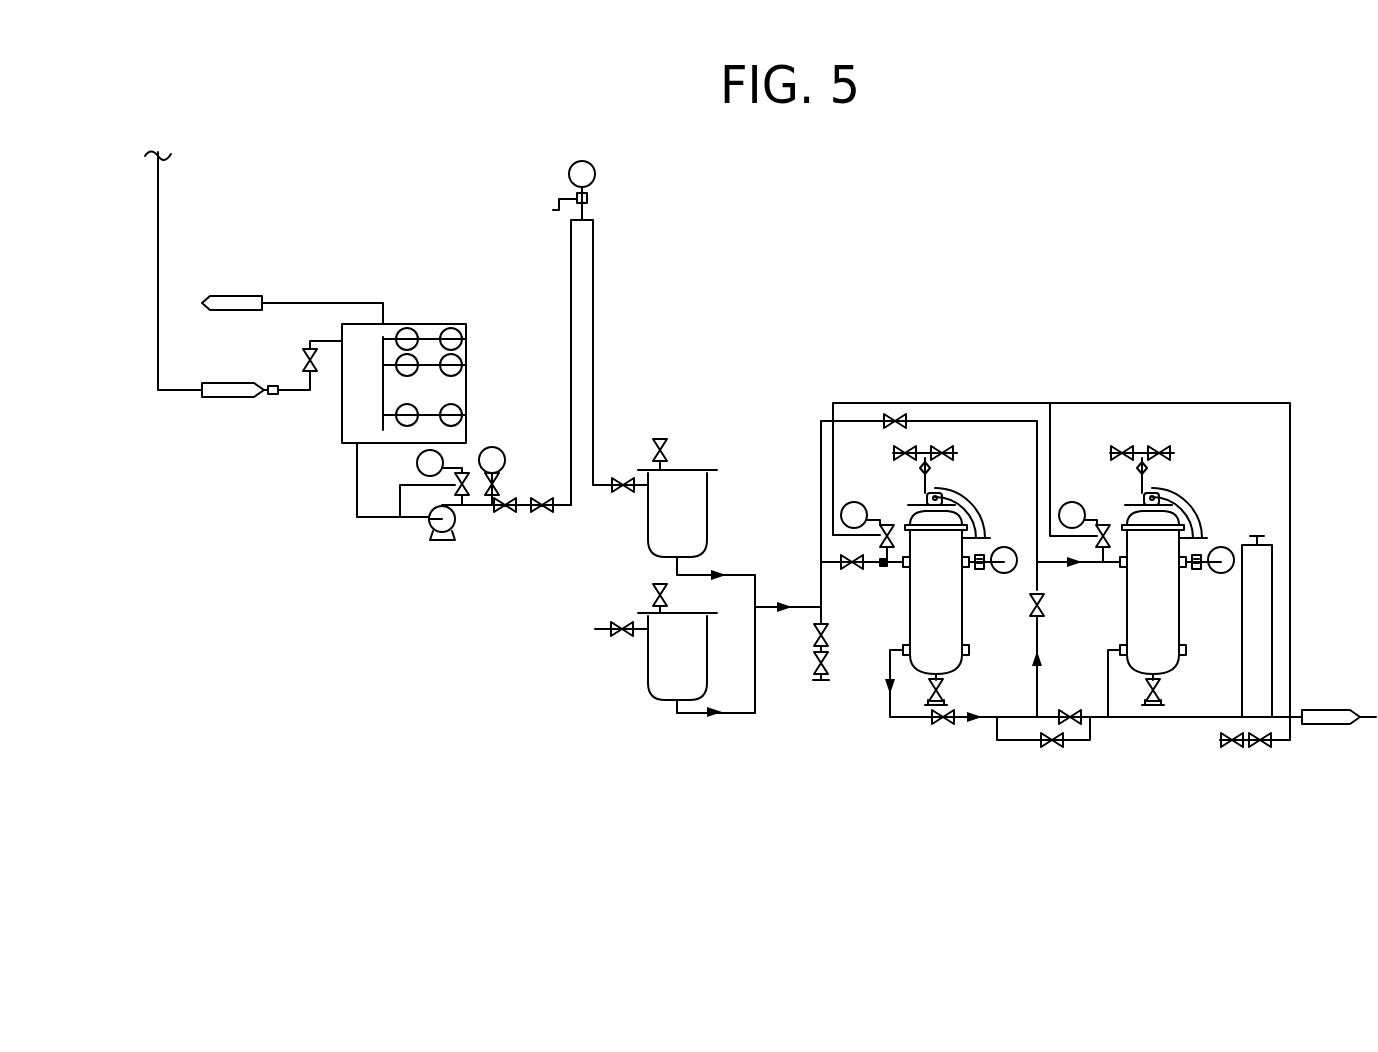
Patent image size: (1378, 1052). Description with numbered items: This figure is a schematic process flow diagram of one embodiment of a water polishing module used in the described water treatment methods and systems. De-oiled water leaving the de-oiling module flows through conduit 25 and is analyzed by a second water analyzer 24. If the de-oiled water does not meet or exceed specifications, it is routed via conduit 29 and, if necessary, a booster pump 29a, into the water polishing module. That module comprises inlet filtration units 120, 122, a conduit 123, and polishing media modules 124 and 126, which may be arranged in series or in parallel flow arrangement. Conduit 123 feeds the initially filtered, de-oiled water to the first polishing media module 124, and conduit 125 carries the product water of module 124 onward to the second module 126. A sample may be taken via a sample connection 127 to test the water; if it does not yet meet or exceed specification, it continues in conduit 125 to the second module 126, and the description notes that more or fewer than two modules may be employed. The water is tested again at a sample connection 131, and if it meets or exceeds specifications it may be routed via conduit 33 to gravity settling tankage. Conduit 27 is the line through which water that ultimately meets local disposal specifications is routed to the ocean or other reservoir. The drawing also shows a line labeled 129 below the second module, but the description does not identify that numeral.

The conduit 25 is at (158, 238).
The conduit 27 is at (293, 303).
The second water analyzer 24 is at (425, 324).
The conduit 29 is at (357, 481).
The booster pump 29a is at (442, 541).
The inlet filtration unit 120 is at (690, 468).
The inlet filtration unit 122 is at (648, 688).
The conduit 123 is at (740, 573).
The polishing media module 124 is at (955, 611).
The second module 126 is at (1172, 611).
The conduit 125 is at (890, 712).
The sample connection 127 is at (1015, 743).
The outlet line 129 is at (1130, 720).
The sample connection 131 is at (1245, 746).
The conduit 33 is at (1328, 710).